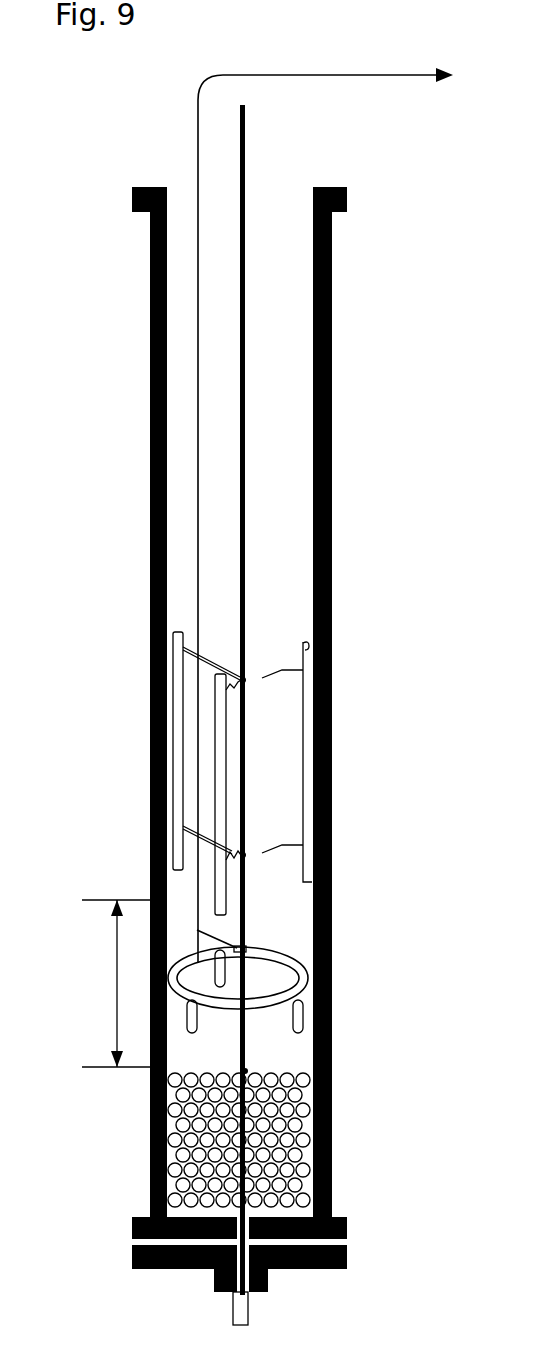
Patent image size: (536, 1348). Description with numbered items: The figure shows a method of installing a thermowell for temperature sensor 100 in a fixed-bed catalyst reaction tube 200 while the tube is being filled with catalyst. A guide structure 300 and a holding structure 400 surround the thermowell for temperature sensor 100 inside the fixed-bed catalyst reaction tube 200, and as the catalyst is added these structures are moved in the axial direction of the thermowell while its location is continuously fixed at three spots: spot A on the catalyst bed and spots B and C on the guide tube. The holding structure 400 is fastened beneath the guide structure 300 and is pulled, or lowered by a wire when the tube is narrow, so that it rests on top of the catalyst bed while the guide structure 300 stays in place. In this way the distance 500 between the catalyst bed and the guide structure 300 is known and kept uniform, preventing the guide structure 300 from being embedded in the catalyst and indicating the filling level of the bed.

The thermowell for temperature sensor 100 is at (248, 416).
The fixed-bed catalyst reaction tube 200 is at (335, 510).
The guide structure 300 is at (227, 738).
The holding structure 400 is at (252, 1005).
The distance between the catalyst bed and the guide structure 500 is at (104, 983).
The spot on the catalyst bed A is at (247, 1071).
The spot on the guide tube B is at (243, 855).
The spot on the guide tube C is at (243, 680).